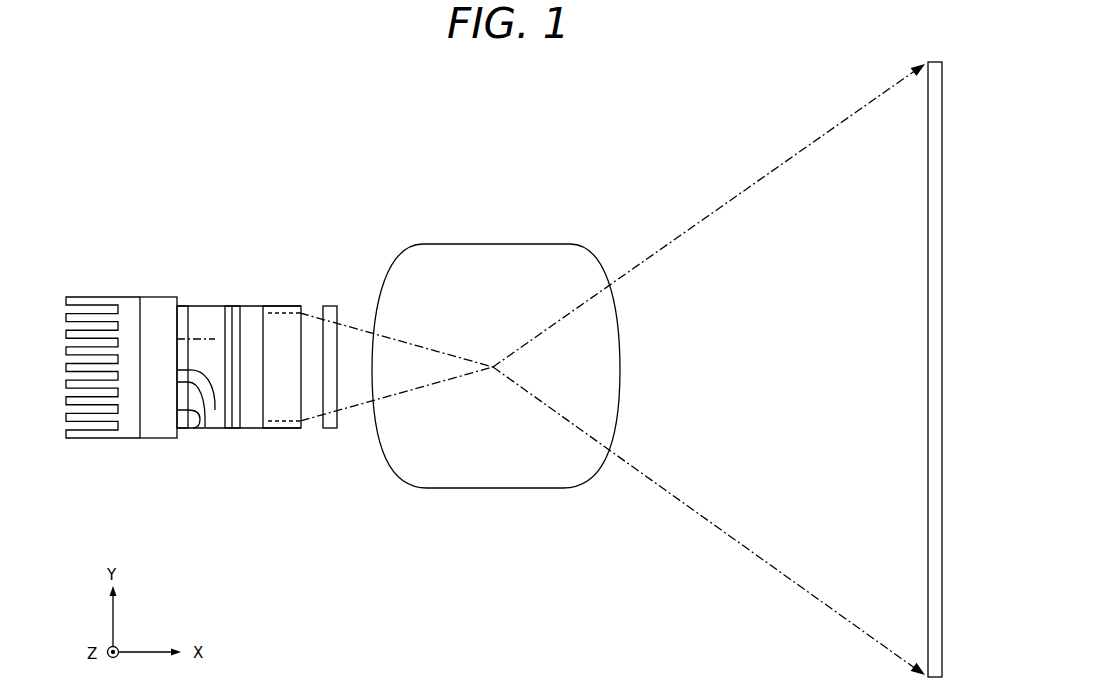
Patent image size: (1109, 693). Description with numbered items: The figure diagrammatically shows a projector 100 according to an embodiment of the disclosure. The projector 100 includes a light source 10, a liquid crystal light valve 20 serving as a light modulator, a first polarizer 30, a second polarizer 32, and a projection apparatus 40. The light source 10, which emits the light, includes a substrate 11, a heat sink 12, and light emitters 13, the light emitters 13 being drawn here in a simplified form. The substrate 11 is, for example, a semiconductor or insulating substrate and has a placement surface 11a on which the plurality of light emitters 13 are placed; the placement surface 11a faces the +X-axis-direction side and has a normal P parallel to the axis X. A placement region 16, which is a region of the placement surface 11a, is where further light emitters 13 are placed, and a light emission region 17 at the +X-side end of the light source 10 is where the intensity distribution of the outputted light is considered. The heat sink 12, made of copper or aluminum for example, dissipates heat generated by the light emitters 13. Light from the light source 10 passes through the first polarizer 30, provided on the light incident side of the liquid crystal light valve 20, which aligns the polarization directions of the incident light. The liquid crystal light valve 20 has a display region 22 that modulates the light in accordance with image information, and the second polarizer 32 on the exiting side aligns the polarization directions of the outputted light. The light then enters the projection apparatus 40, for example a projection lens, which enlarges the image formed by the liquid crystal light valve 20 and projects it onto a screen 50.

The projector 100 is at (623, 190).
The light source 10 is at (127, 312).
The heat sink 12 is at (128, 313).
The substrate 11 is at (156, 313).
The placement surface 11a is at (197, 428).
The light emitters 13 is at (188, 320).
The normal P is at (206, 340).
The placement region 16 is at (205, 427).
The light emission region 17 is at (215, 410).
The first polarizer 30 is at (233, 322).
The liquid crystal light valve 20 is at (285, 313).
The display region 22 is at (279, 326).
The second polarizer 32 is at (326, 313).
The projection apparatus 40 is at (494, 272).
The screen 50 is at (928, 107).